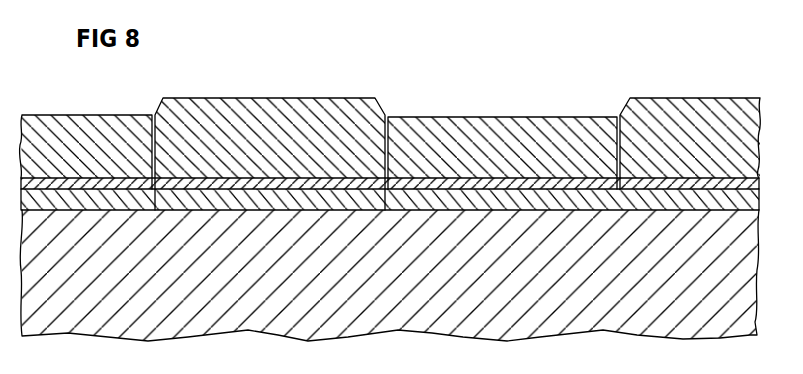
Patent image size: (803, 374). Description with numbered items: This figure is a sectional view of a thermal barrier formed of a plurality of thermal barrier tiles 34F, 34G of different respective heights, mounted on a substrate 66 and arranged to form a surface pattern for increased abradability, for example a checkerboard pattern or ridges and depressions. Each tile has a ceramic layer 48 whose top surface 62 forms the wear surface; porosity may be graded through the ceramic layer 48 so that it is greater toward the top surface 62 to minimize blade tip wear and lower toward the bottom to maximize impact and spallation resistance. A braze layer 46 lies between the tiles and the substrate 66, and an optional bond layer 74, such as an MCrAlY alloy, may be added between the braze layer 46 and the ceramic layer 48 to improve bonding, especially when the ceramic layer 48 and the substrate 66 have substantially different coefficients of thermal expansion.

The top surface 62 is at (227, 98).
The ceramic layer 48 is at (259, 113).
The braze layer 46 is at (298, 200).
The bond layer 74 is at (334, 185).
The substrate 66 is at (220, 276).
The thermal barrier tile 34F is at (495, 95).
The thermal barrier tile 34G is at (661, 84).